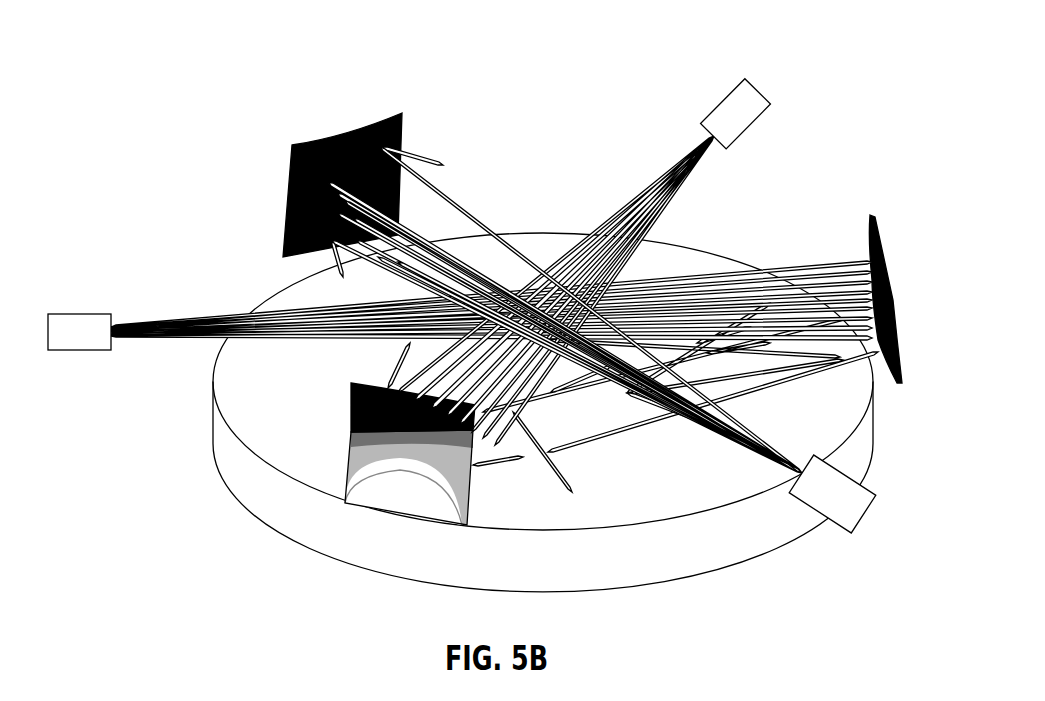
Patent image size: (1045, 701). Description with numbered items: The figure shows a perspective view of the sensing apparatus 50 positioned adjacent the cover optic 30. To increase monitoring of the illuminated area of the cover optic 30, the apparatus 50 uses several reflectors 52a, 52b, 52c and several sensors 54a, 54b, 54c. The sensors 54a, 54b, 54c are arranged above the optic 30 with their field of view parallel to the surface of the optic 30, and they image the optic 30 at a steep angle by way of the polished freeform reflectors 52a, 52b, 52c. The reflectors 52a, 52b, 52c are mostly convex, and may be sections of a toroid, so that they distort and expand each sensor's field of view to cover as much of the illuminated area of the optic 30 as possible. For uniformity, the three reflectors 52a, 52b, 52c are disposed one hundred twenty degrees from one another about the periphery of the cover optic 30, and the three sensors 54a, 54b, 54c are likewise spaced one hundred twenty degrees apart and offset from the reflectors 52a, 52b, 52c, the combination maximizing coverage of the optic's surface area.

The cover optic 30 is at (248, 487).
The apparatus 50 is at (174, 62).
The reflector 52a is at (876, 227).
The reflector 52b is at (386, 512).
The reflector 52c is at (337, 136).
The sensor 54a is at (75, 313).
The sensor 54b is at (757, 91).
The sensor 54c is at (878, 497).